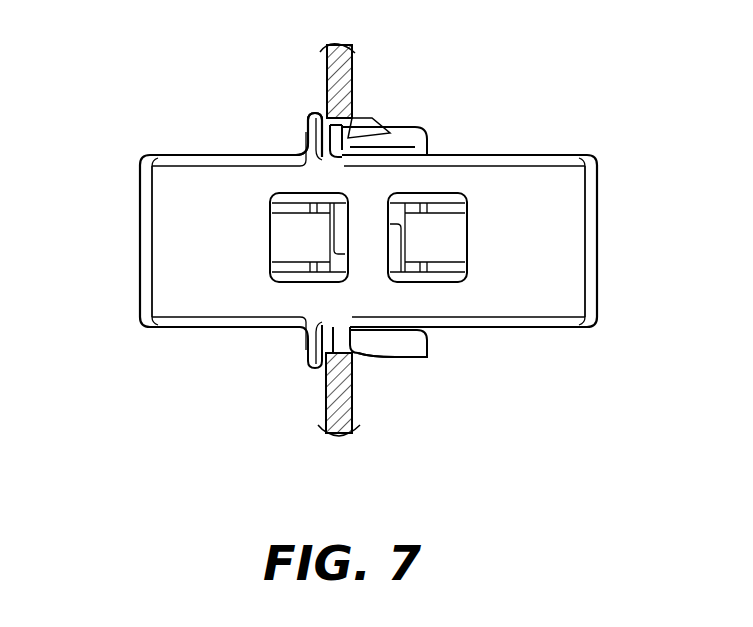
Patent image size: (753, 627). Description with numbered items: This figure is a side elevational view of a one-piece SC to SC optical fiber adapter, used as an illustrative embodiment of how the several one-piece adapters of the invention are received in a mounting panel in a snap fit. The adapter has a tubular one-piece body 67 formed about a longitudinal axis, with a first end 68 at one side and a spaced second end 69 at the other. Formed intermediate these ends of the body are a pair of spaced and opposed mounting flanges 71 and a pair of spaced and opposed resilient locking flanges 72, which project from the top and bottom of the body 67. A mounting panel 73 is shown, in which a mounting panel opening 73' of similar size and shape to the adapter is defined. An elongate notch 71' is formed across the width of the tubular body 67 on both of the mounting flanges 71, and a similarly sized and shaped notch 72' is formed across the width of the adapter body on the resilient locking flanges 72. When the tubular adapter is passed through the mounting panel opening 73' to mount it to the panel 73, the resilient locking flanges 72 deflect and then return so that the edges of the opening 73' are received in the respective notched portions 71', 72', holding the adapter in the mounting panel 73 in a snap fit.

The tubular one-piece body 67 is at (550, 264).
The first end 68 is at (557, 194).
The second end 69 is at (167, 276).
The mounting flanges 71 is at (254, 243).
The elongate notch 71' is at (258, 389).
The locking flanges 72 is at (435, 243).
The notch 72' is at (407, 403).
The mounting panel 73 is at (345, 249).
The mounting panel opening 73' is at (411, 105).